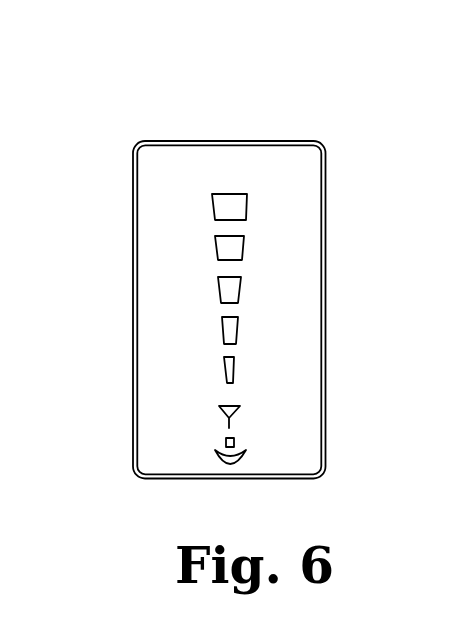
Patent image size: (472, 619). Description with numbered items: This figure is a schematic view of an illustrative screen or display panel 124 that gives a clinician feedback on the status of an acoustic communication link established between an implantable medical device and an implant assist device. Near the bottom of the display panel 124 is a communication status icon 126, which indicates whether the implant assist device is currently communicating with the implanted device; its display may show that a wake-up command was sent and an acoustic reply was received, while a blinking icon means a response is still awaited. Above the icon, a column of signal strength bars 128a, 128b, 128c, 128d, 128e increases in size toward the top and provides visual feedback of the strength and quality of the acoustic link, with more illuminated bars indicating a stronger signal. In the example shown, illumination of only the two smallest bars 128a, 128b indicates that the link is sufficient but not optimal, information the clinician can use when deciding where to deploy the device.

The screen or display panel 124 is at (252, 108).
The communication status icon 126 is at (233, 410).
The signal strength bar 128a is at (233, 369).
The signal strength bar 128b is at (228, 324).
The signal strength bar 128c is at (235, 290).
The signal strength bar 128d is at (230, 247).
The signal strength bar 128e is at (234, 209).